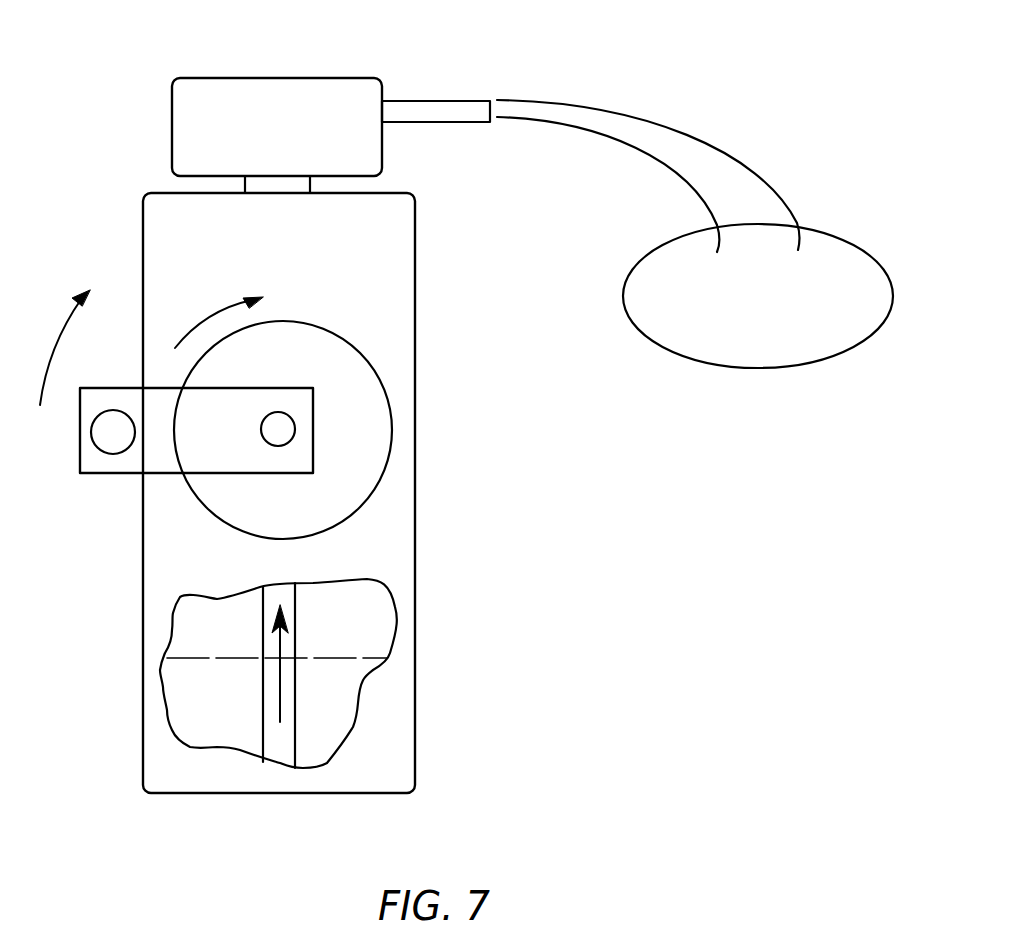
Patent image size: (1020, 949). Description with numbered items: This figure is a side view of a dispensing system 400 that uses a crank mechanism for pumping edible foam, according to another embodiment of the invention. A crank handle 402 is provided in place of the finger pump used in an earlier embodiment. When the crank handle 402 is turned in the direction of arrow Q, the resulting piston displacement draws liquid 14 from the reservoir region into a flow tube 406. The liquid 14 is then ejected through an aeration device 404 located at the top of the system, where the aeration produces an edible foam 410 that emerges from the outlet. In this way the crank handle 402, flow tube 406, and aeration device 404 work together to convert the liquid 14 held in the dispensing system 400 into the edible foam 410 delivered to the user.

The dispensing system 400 is at (91, 114).
The crank handle 402 is at (100, 474).
The aeration device 404 is at (312, 186).
The flow tube 406 is at (297, 636).
The liquid 14 is at (197, 710).
The edible foam 410 is at (708, 363).